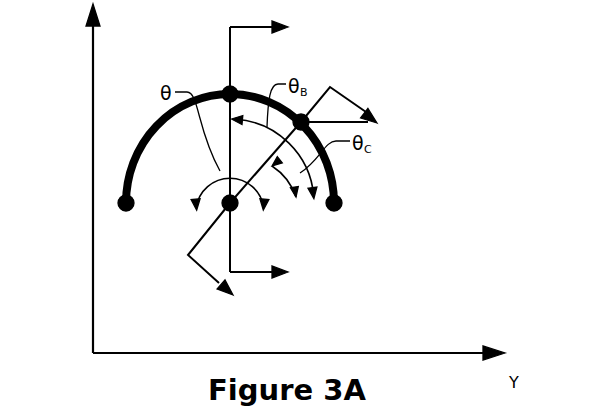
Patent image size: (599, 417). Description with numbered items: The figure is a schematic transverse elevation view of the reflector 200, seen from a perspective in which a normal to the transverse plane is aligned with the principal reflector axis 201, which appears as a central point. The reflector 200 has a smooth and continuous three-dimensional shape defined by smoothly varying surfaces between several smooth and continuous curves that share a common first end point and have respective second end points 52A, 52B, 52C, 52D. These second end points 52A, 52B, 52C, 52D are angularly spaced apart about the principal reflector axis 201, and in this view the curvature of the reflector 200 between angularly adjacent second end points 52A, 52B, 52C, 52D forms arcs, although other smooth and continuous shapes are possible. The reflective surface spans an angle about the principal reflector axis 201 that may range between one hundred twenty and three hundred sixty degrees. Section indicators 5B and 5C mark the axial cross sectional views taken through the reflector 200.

The reflector 200 is at (211, 64).
The principal reflector axis 201 is at (236, 209).
The second end point 52A is at (236, 92).
The second end point 52B is at (345, 101).
The second end point 52C is at (340, 203).
The second end point 52D is at (120, 202).
The section view 5B direction 5B is at (273, 147).
The section view 5C direction 5C is at (297, 196).